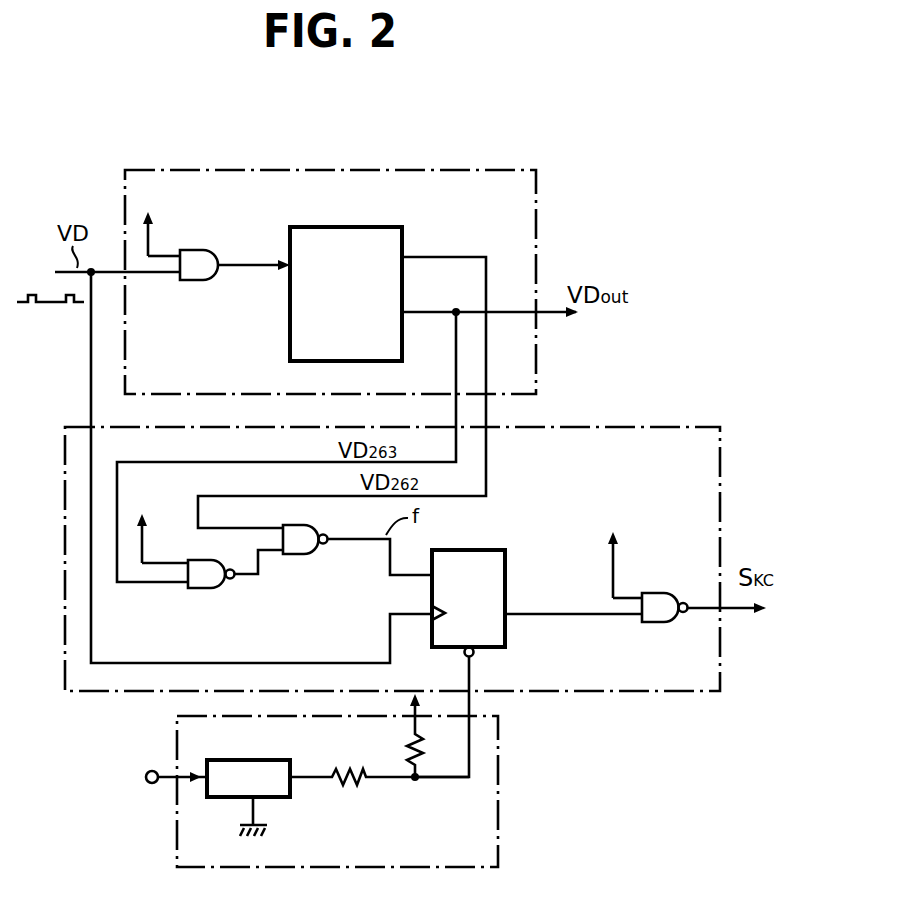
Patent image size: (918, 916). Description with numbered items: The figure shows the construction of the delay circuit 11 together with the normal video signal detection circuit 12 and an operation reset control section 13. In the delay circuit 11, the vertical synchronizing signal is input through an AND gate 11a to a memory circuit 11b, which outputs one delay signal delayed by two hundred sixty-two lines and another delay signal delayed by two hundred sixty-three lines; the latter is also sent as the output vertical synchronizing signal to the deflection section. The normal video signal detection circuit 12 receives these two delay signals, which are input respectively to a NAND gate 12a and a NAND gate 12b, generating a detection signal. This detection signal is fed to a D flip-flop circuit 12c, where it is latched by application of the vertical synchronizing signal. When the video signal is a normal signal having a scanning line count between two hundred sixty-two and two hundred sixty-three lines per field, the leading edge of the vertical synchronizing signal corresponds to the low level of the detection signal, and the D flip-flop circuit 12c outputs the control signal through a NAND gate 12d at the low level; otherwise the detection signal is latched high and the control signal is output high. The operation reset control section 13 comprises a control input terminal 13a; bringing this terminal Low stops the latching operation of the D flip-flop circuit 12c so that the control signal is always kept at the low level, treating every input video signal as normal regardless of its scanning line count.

The delay circuit 11 is at (495, 170).
The AND gate 11a is at (203, 257).
The memory circuit 11b is at (395, 227).
The normal video signal detection circuit 12 is at (545, 427).
The NAND gate 12a is at (210, 590).
The NAND gate 12b is at (308, 556).
The D flip-flop circuit 12c is at (482, 550).
The NAND gate 12d is at (658, 593).
The operation reset control section 13 is at (502, 790).
The control input terminal 13a is at (147, 783).